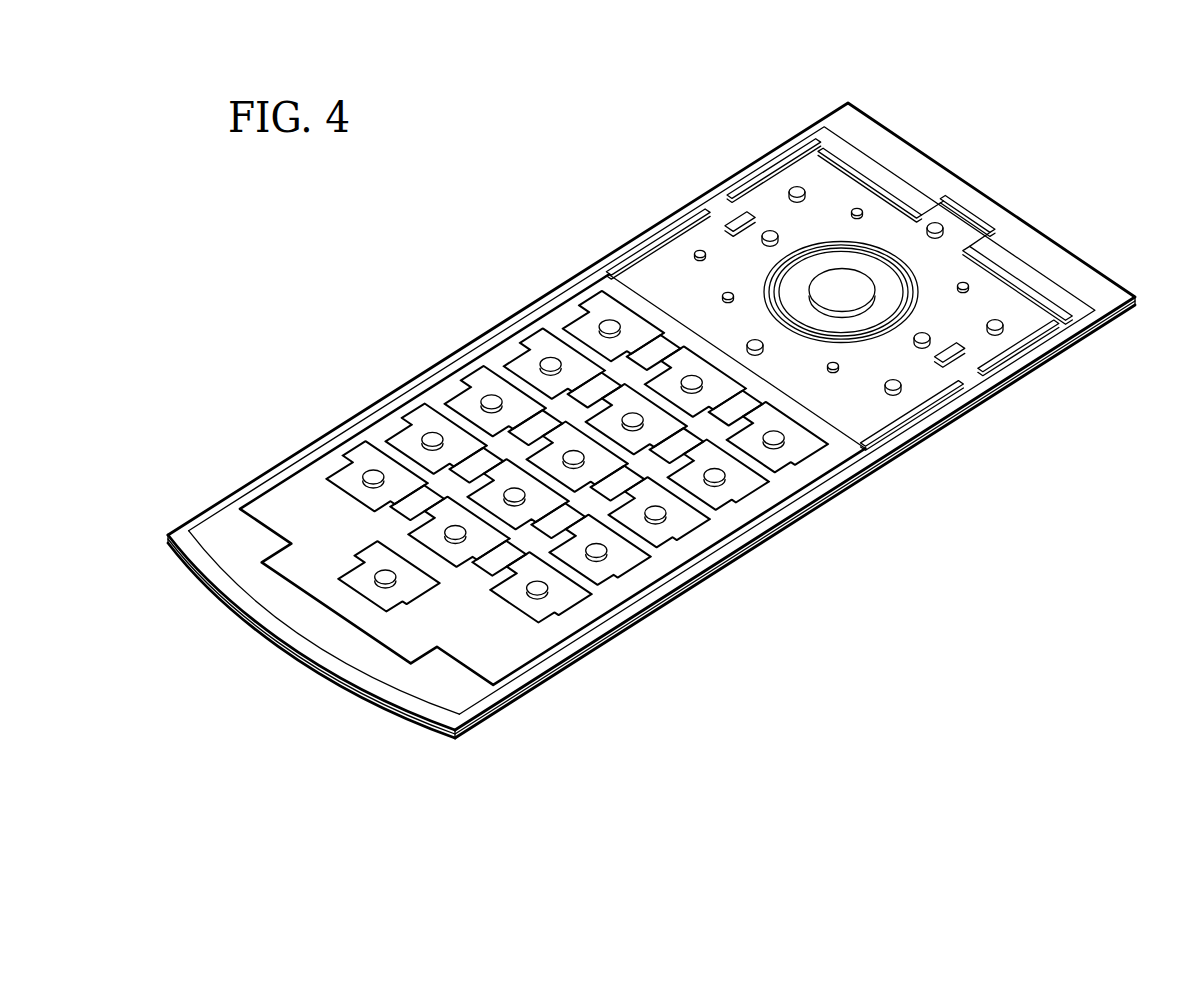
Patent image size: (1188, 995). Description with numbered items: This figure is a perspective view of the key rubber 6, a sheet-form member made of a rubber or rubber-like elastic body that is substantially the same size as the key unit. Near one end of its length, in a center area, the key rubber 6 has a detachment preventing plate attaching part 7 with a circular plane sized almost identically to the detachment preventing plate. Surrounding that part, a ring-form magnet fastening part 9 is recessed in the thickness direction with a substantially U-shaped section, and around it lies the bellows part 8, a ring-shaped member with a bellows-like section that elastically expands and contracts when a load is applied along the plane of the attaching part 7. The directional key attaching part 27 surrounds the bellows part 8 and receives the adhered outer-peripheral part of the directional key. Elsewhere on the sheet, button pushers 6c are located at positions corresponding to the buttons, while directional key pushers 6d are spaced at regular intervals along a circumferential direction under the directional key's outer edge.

The key rubber 6 is at (505, 323).
The button pushers 6c is at (488, 396).
The directional key pushers 6d is at (773, 232).
The detachment preventing plate attaching part 7 is at (852, 290).
The bellows part 8 is at (935, 342).
The ring-form magnet fastening part 9 is at (892, 289).
The directional key attaching part 27 is at (853, 353).